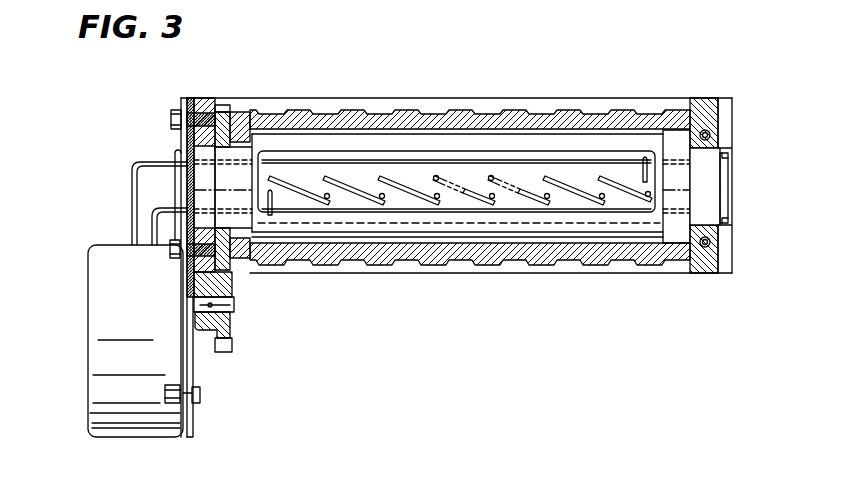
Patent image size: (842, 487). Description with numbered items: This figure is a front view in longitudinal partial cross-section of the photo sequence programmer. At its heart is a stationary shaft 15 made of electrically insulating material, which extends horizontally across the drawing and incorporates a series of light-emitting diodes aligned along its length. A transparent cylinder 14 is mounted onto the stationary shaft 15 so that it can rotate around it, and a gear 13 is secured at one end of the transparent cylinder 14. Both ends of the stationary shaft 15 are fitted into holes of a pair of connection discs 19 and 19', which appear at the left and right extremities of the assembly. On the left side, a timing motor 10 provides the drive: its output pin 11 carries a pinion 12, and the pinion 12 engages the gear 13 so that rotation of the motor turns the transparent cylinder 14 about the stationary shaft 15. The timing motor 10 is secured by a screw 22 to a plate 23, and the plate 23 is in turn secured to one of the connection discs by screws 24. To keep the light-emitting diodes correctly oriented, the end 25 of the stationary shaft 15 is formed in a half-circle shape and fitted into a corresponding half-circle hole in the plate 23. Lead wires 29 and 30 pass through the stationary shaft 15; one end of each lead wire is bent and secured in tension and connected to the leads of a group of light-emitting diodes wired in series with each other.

The timing motor 10 is at (147, 437).
The output pin 11 is at (236, 305).
The pinion 12 is at (234, 347).
The gear 13 is at (233, 175).
The transparent cylinder 14 is at (293, 114).
The stationary shaft 15 is at (238, 140).
The connection disc 19 is at (198, 250).
The connection disc 19' is at (711, 168).
The screw 22 is at (163, 393).
The plate 23 is at (195, 357).
The screws 24 is at (171, 119).
The end of stationary shaft 25 is at (177, 176).
The lead wire 29 is at (513, 160).
The lead wire 30 is at (152, 212).